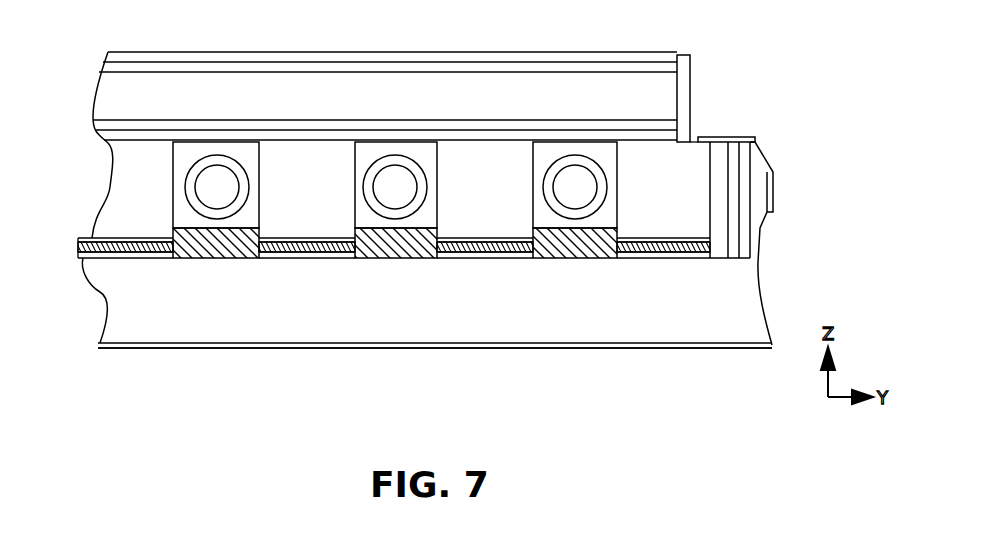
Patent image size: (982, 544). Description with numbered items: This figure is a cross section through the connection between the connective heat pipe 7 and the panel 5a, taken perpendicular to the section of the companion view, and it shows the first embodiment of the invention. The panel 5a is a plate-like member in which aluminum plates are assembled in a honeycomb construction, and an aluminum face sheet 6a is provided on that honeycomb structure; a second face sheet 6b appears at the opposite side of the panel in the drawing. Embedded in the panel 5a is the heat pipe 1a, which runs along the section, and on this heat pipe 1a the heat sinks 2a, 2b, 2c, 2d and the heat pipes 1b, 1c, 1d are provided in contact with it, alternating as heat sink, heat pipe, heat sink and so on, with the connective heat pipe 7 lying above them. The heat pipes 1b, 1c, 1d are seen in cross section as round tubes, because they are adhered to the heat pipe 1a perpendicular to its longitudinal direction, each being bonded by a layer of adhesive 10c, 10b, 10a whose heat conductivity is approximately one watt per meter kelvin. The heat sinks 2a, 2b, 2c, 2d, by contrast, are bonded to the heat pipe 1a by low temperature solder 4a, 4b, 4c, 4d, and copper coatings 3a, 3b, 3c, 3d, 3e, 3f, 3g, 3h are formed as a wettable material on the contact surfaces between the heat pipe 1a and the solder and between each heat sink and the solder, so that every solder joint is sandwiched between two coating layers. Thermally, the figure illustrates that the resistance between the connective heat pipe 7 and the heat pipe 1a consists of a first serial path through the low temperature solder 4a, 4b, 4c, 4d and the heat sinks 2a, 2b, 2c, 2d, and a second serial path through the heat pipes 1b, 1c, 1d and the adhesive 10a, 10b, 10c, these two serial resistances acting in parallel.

The connective heat pipe 7 is at (112, 97).
The heat sink 2a is at (670, 167).
The heat sink 2b is at (483, 167).
The heat sink 2c is at (307, 163).
The heat sink 2d is at (137, 163).
The heat pipe 1a is at (740, 305).
The heat pipe 1b is at (588, 150).
The heat pipe 1c is at (380, 130).
The heat pipe 1d is at (235, 147).
The adhesive 10a is at (563, 258).
The adhesive 10b is at (383, 258).
The adhesive 10c is at (210, 254).
The copper coating 3a is at (705, 258).
The copper coating 3b is at (682, 237).
The copper coating 3c is at (507, 258).
The copper coating 3d is at (496, 237).
The copper coating 3e is at (333, 258).
The copper coating 3f is at (318, 237).
The copper coating 3g is at (165, 258).
The copper coating 3h is at (90, 237).
The low temperature solder 4a is at (657, 258).
The low temperature solder 4b is at (477, 258).
The low temperature solder 4c is at (290, 258).
The low temperature solder 4d is at (107, 258).
The panel 5a is at (743, 215).
The face sheet 6a is at (715, 137).
The base plate 6b is at (423, 348).